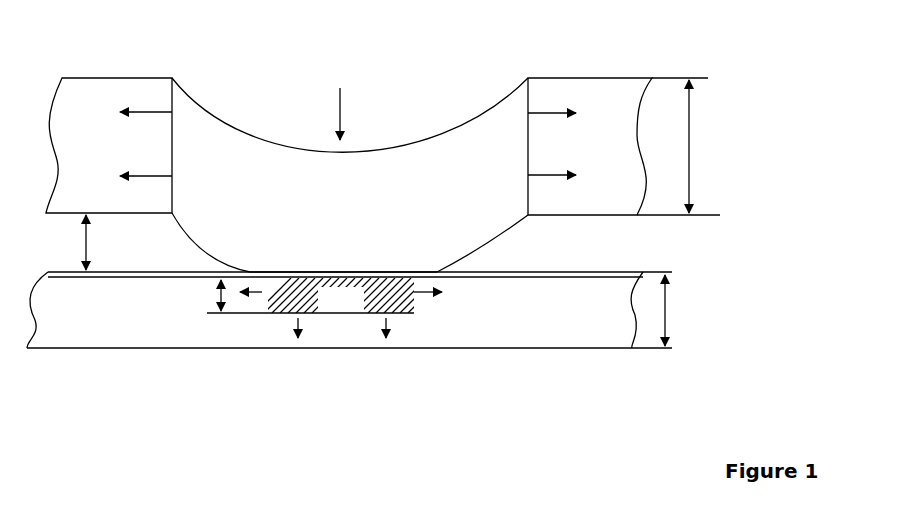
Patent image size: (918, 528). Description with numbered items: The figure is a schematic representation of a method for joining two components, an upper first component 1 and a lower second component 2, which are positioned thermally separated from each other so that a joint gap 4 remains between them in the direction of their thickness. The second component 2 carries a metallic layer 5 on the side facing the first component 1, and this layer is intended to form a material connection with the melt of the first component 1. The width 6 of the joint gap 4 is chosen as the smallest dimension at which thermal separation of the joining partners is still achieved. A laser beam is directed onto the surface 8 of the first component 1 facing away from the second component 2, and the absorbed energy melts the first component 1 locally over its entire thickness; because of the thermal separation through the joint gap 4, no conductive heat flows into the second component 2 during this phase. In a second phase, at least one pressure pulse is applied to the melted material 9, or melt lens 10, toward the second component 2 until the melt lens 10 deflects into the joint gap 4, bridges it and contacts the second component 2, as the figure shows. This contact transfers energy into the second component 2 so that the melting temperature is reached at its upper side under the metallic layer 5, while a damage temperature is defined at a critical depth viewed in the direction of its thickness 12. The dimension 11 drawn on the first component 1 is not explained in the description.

The first component 1 is at (582, 78).
The second component 2 is at (117, 348).
The joint gap 4 is at (613, 252).
The metallic layer 5 is at (510, 271).
The width of the joint gap 6 is at (73, 242).
The surface of the first component 8 is at (105, 78).
The melted material 9 is at (350, 223).
The melt lens 10 is at (240, 158).
The height of joining partners 11 is at (692, 172).
The thickness of the second component 12 is at (667, 312).